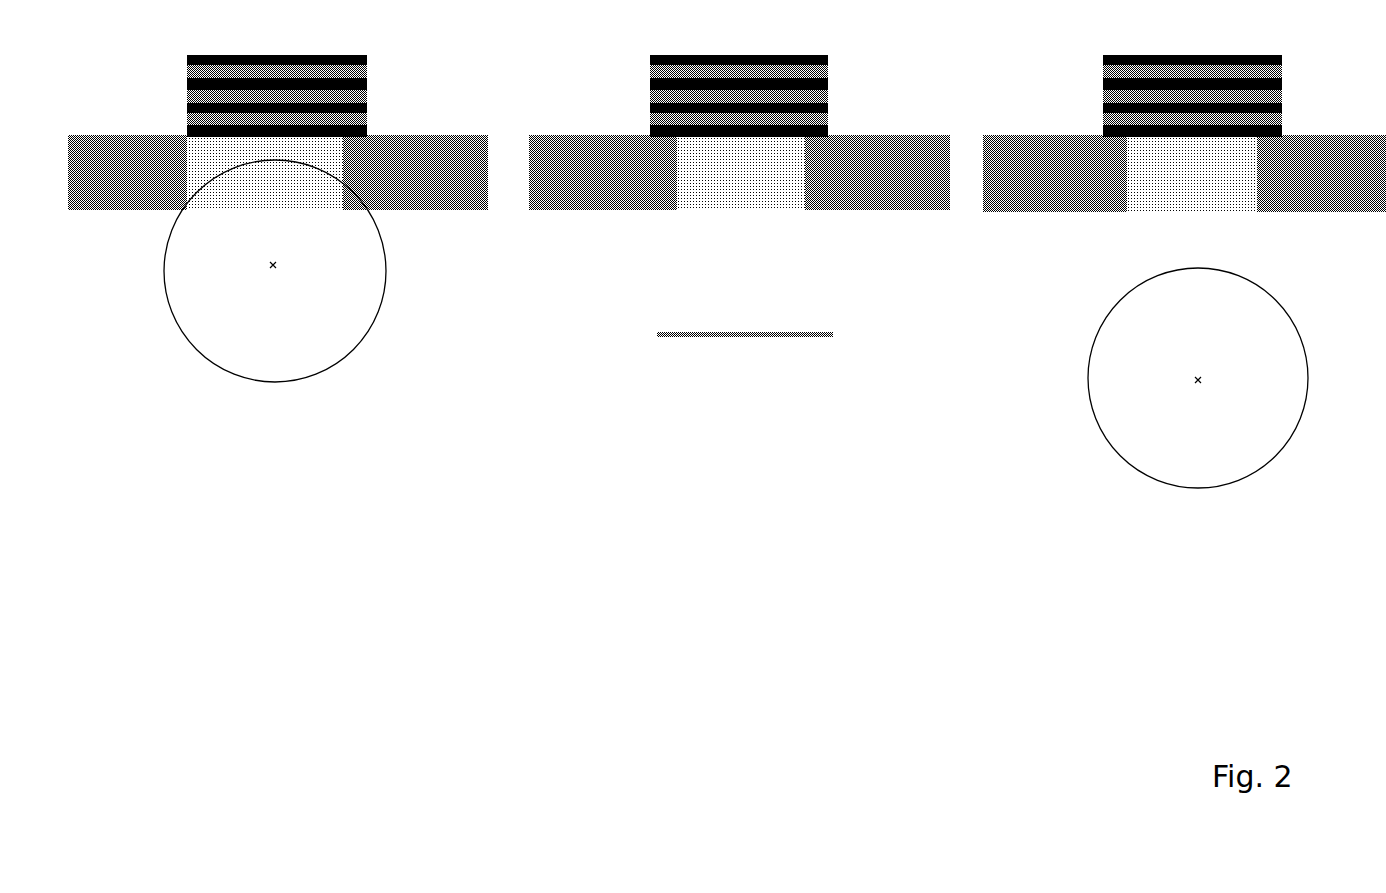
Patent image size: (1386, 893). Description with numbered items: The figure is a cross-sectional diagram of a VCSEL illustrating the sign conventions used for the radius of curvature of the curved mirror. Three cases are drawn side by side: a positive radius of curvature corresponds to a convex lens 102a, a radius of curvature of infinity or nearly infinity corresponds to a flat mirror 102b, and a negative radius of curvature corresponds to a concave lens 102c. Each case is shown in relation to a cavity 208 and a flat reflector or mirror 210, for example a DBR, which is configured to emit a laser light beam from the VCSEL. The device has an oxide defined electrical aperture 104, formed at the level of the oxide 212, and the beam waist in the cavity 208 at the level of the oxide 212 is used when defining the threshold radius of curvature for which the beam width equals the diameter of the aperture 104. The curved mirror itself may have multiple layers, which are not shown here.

The convex lens 102a is at (330, 363).
The flat mirror 102b is at (780, 337).
The concave lens 102c is at (1160, 273).
The electrical aperture 104 is at (708, 210).
The cavity 208 is at (653, 293).
The flat reflector or mirror 210 is at (797, 55).
The oxide 212 is at (845, 137).